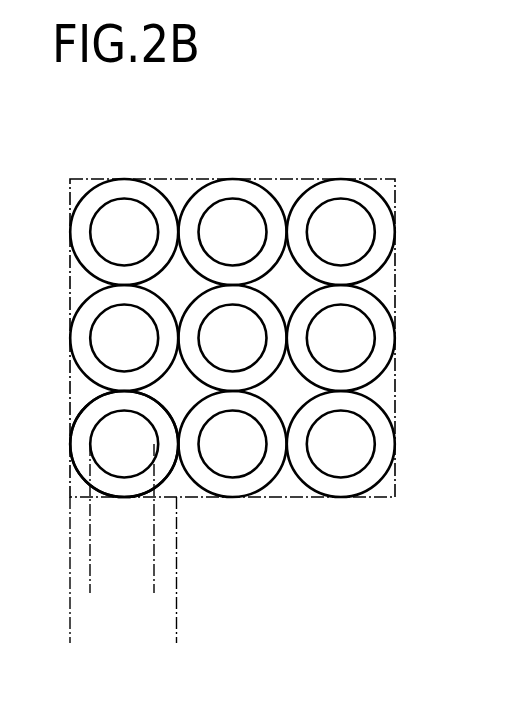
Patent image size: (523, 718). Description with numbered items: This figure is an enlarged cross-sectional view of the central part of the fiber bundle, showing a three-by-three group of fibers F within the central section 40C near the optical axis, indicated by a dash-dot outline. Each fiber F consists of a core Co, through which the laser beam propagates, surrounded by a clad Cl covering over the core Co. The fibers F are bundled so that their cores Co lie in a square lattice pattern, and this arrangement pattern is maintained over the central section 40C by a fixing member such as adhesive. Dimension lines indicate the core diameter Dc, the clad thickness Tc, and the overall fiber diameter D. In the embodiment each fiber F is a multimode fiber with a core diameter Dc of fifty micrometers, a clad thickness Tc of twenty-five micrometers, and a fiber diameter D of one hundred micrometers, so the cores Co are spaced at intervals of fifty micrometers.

The central section 40C is at (290, 497).
The fiber F is at (88, 403).
The core Co is at (103, 432).
The clad CI is at (160, 468).
The clad thickness Tc is at (110, 539).
The core diameter Dc is at (154, 581).
The fiber diameter D is at (176, 624).